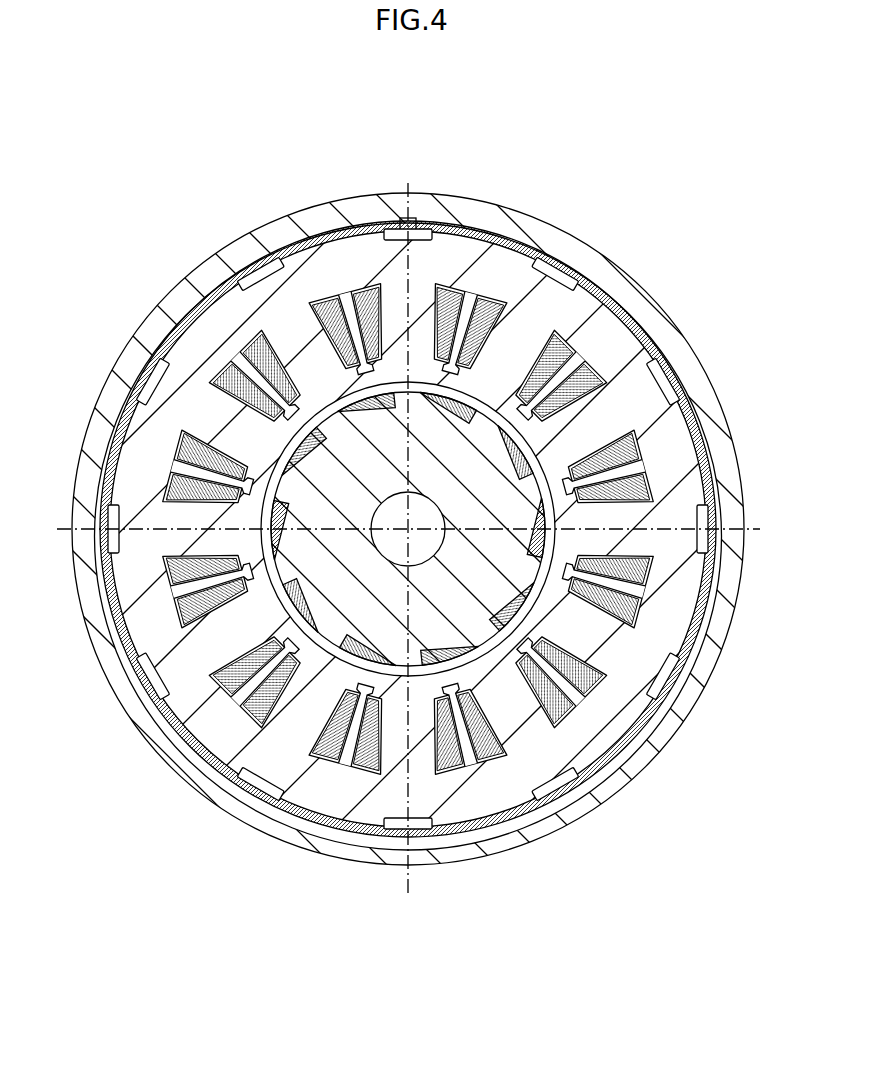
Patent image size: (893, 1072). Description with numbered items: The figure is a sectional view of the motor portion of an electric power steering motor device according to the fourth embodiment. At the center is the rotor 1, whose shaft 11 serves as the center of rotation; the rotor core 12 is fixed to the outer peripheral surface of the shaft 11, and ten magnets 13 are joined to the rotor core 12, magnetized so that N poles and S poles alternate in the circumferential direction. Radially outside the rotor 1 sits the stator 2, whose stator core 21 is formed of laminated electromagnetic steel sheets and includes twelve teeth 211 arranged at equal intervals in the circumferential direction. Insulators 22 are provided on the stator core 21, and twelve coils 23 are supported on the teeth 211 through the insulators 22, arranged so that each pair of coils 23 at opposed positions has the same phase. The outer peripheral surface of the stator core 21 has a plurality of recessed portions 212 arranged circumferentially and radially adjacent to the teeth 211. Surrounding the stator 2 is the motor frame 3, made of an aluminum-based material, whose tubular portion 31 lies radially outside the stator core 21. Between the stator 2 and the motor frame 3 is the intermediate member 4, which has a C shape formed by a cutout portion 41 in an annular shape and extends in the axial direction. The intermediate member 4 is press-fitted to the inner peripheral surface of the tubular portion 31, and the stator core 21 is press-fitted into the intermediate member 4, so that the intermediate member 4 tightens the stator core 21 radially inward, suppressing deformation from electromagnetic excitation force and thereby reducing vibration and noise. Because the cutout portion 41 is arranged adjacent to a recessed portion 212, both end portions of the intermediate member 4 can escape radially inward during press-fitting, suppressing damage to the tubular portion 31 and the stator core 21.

The rotor 1 is at (420, 650).
The shaft 11 is at (395, 543).
The rotor core 12 is at (537, 625).
The magnets 13 is at (547, 610).
The stator 2 is at (446, 449).
The stator core 21 is at (328, 262).
The teeth 211 is at (313, 363).
The recessed portions 212 is at (400, 229).
The insulators 22 is at (458, 270).
The coils 23 is at (493, 292).
The motor frame 3 is at (446, 529).
The tubular portion 31 is at (657, 327).
The intermediate member 4 is at (137, 360).
The cutout portion 41 is at (422, 217).